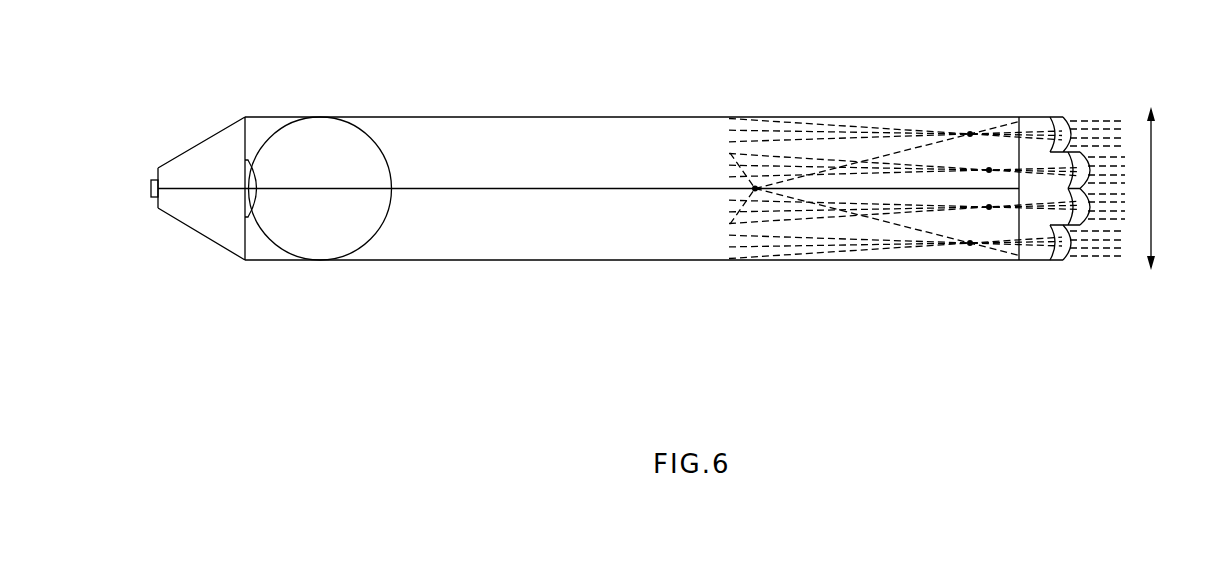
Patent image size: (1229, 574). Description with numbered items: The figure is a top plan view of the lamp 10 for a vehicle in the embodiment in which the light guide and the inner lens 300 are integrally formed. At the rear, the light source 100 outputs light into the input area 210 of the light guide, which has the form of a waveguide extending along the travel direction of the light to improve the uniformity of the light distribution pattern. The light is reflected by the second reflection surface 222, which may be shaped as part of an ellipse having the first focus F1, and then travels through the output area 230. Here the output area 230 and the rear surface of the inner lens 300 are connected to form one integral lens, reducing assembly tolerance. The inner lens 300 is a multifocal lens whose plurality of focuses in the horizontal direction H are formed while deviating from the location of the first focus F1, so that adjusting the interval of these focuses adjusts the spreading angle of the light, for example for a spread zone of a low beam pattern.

The lamp for a vehicle 10 is at (1053, 35).
The light source 100 is at (153, 198).
The input area 210 is at (205, 222).
The second reflection surface 222 is at (319, 242).
The output area 230 is at (553, 245).
The first focus F1 is at (755, 190).
The inner lens 300 is at (1038, 222).
The horizontal direction H is at (1151, 192).